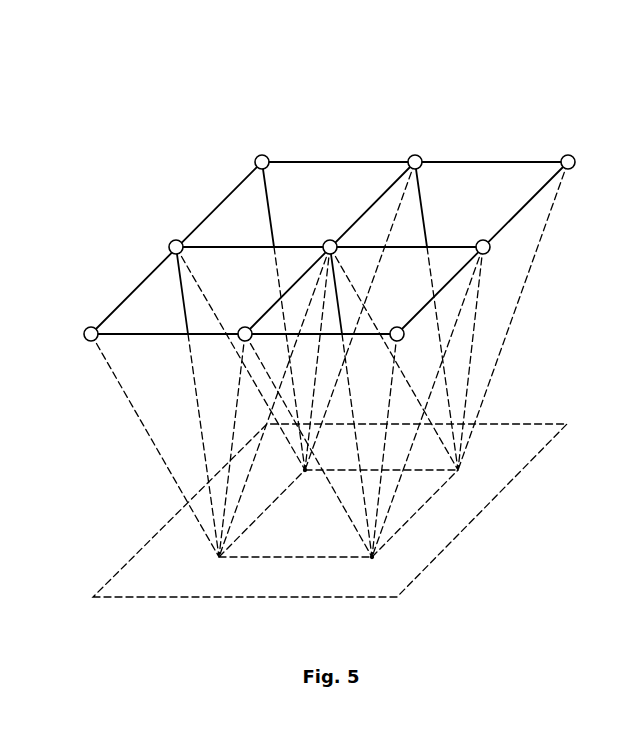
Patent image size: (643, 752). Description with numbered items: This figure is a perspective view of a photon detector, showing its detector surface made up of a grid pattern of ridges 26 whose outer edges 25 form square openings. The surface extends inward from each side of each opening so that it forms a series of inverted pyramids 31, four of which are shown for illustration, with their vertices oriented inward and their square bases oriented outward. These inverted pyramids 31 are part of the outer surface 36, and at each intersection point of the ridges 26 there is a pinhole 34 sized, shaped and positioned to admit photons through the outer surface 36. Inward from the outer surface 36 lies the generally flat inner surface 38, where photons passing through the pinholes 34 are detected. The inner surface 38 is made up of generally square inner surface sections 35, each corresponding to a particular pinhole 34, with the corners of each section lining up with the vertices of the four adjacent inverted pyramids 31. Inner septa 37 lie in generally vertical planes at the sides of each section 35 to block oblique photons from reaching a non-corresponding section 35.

The outer edge 25 is at (328, 160).
The ridges 26 is at (525, 159).
The inverted pyramids 31 is at (371, 178).
The pinholes 34 is at (258, 156).
The inner surface sections 35 is at (255, 560).
The outer surface 36 is at (208, 230).
The inner septa 37 is at (295, 323).
The inner surface 38 is at (424, 566).